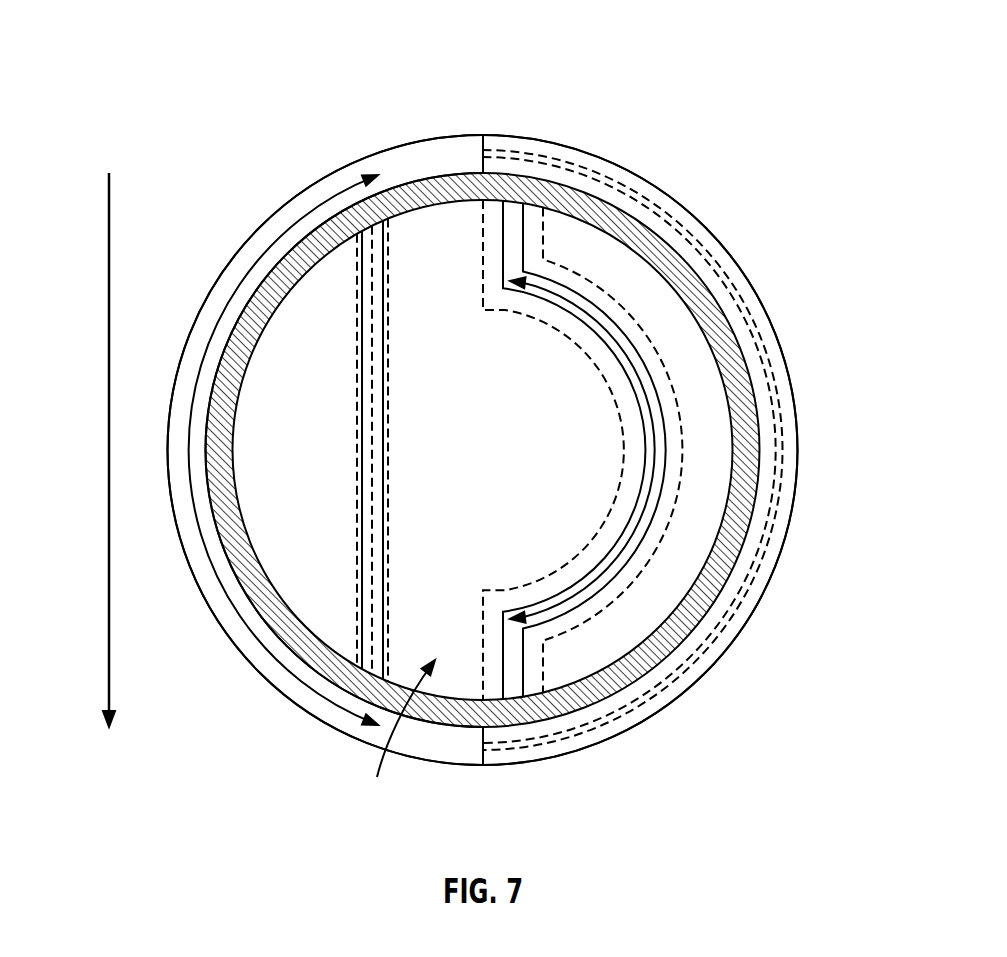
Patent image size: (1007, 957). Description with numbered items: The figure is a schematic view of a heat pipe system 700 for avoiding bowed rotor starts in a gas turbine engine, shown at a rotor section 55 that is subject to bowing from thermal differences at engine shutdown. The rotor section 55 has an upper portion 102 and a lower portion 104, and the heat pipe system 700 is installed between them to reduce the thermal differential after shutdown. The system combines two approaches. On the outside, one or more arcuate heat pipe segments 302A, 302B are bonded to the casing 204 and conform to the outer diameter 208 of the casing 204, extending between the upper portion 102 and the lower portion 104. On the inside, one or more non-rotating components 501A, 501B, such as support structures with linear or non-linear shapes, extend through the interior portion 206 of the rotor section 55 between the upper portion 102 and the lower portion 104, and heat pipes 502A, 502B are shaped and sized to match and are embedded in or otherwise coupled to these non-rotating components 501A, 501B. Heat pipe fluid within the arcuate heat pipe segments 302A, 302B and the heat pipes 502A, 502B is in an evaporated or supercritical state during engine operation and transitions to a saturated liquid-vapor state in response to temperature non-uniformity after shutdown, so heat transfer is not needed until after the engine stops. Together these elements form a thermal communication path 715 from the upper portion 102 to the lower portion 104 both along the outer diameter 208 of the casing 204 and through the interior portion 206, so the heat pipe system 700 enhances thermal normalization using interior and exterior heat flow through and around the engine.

The rotor section 55 is at (307, 42).
The heat pipe system 700 is at (678, 65).
The upper portion 102 is at (482, 117).
The lower portion 104 is at (484, 777).
The casing 204 is at (752, 465).
The interior portion 206 is at (396, 737).
The outer diameter 208 is at (257, 613).
The arcuate heat pipe segment 302A is at (372, 153).
The arcuate heat pipe segment 302B is at (593, 153).
The non-rotating component 501A is at (360, 645).
The heat pipe 502A is at (361, 328).
The non-rotating component 501B is at (625, 582).
The heat pipe 502B is at (592, 302).
The thermal communication path 715 is at (108, 323).